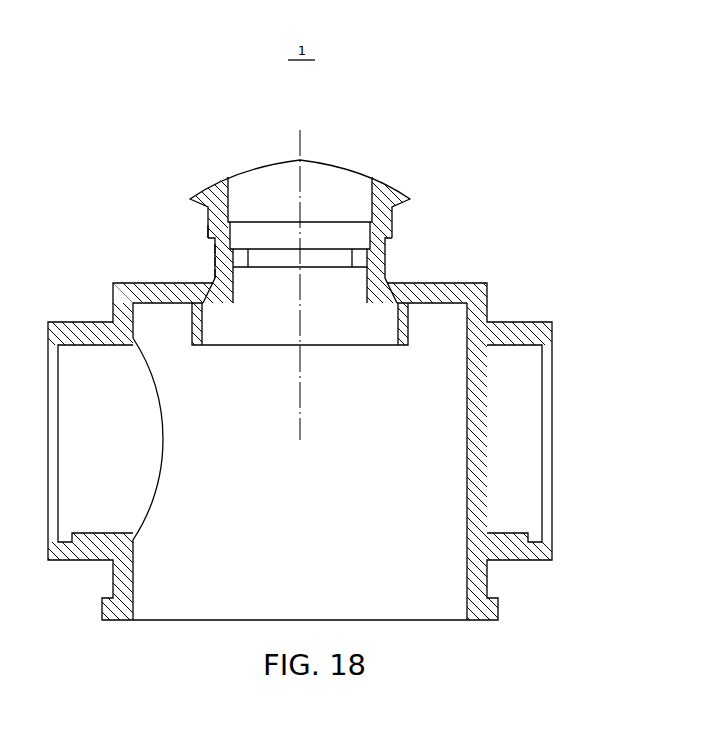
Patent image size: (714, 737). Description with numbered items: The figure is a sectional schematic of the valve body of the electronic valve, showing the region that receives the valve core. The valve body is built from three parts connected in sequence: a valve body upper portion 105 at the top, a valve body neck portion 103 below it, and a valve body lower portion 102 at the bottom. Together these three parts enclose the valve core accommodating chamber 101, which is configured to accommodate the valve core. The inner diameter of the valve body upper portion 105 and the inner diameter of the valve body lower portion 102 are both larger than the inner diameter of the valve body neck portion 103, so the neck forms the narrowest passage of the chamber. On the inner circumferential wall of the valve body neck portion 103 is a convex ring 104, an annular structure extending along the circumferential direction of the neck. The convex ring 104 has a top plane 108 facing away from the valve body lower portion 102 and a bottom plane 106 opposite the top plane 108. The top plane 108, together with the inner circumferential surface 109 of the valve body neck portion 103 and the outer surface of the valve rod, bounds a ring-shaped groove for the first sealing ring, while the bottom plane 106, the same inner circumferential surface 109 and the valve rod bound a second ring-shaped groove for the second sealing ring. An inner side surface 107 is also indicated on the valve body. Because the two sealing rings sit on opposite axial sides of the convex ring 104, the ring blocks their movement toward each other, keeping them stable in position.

The valve core accommodating chamber 101 is at (432, 505).
The valve body lower portion 102 is at (487, 303).
The valve body neck portion 103 is at (384, 272).
The convex ring 104 is at (365, 256).
The valve body upper portion 105 is at (395, 170).
The bottom plane 106 is at (222, 274).
The inner side surface 107 is at (220, 262).
The top plane 108 is at (217, 250).
The inner circumferential surface 109 is at (208, 230).